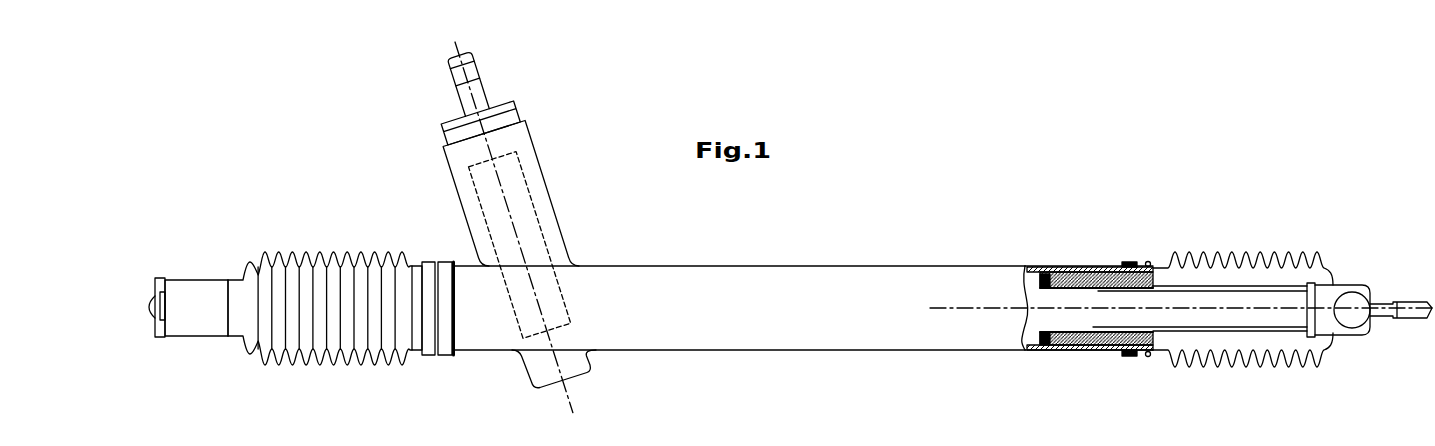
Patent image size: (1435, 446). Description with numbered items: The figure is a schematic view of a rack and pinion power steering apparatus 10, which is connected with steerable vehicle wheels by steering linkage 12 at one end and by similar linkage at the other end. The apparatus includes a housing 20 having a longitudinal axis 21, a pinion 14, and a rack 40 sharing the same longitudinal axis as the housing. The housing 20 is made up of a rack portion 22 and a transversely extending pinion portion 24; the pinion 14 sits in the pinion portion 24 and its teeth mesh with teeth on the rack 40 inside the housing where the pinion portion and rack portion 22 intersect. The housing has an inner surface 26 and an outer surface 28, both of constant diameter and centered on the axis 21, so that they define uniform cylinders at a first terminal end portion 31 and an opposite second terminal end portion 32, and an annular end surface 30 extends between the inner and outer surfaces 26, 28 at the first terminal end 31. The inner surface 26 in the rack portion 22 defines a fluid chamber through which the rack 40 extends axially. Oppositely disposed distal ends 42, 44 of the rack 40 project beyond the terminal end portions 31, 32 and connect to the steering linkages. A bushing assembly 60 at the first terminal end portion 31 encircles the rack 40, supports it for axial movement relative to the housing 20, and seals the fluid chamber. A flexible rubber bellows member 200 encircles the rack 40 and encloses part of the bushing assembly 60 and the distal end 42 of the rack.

The rack and pinion power steering apparatus 10 is at (286, 182).
The steering linkage 12 is at (1404, 284).
The pinion 14 is at (528, 193).
The housing 20 is at (661, 258).
The longitudinal axis 21 is at (1188, 307).
The rack portion 22 is at (752, 256).
The pinion portion 24 is at (568, 204).
The inner surface 26 is at (715, 438).
The outer surface 28 is at (775, 445).
The annular end surface 30 is at (893, 442).
The first terminal end portion 31 is at (1122, 372).
The second terminal end portion 32 is at (438, 370).
The rack 40 is at (1225, 302).
The distal end 42 is at (1264, 344).
The distal end 44 is at (209, 270).
The bushing assembly 60 is at (1090, 260).
The bellows member 200 is at (1292, 245).